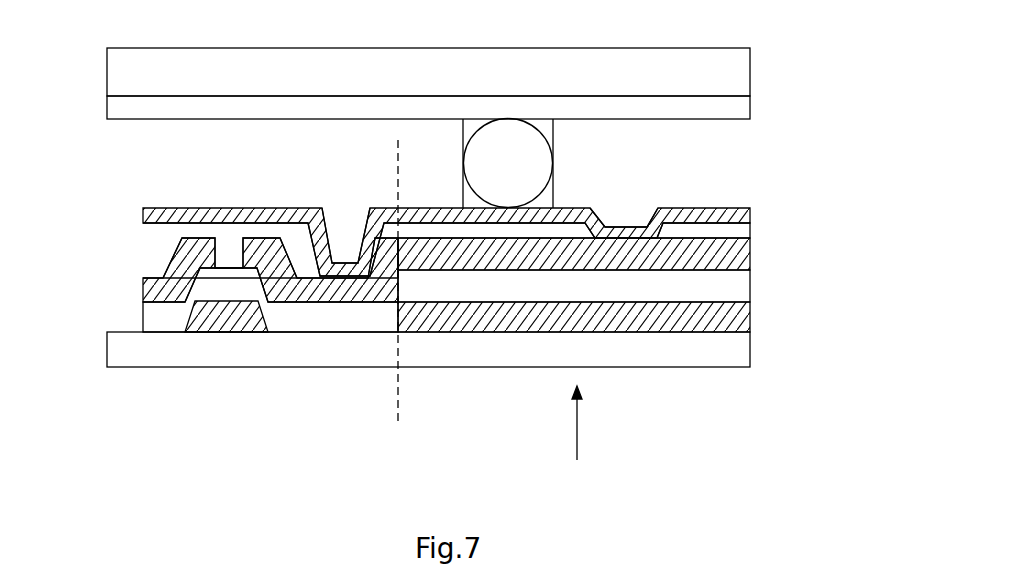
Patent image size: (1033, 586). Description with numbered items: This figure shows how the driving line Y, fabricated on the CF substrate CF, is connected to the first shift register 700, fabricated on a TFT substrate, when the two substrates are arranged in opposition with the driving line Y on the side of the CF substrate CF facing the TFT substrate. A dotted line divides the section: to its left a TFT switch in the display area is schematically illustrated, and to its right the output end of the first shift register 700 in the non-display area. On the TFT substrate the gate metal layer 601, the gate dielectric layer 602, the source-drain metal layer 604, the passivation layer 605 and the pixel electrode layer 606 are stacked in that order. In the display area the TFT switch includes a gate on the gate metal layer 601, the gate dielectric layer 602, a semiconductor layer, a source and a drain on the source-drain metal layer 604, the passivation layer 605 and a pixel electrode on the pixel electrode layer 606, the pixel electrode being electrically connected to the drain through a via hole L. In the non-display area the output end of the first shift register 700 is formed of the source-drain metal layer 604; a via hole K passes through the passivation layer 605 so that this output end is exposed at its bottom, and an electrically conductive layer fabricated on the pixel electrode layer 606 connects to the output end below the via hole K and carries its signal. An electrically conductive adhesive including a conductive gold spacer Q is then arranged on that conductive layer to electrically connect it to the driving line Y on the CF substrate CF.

The gate metal layer 601 is at (215, 330).
The gate dielectric layer 602 is at (165, 320).
The source-drain metal layer 604 is at (143, 292).
The passivation layer 605 is at (155, 252).
The pixel electrode layer 606 is at (143, 230).
The first shift register 700 is at (589, 439).
The CF substrate CF is at (743, 68).
The driving line Y is at (745, 108).
The conductive gold spacer Q is at (508, 155).
The via hole K is at (640, 208).
The via hole L is at (348, 242).